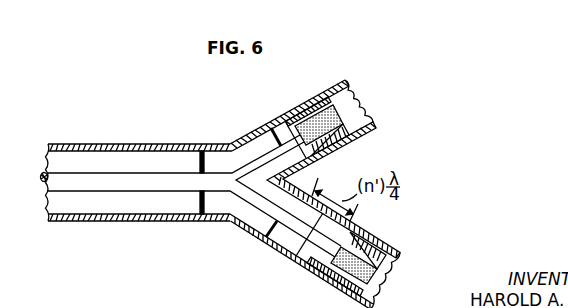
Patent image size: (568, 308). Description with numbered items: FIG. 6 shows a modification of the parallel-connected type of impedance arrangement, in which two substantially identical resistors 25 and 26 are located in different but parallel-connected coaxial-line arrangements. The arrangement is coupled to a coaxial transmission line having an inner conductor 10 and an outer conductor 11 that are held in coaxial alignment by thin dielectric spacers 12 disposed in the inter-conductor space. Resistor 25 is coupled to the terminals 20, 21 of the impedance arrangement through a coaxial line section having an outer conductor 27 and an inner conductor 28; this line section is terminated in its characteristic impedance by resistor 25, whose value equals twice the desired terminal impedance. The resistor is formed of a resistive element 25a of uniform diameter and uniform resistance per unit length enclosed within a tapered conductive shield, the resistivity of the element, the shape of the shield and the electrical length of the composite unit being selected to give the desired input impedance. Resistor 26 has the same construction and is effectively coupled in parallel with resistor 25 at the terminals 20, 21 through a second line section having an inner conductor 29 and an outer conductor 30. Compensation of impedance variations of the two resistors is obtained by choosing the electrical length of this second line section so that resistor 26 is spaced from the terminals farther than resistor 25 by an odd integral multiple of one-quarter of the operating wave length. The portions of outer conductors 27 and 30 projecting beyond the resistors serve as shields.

The inner conductor 10 is at (128, 192).
The outer conductor 11 is at (140, 144).
The dielectric spacers 12 is at (200, 163).
The terminal 20 is at (239, 180).
The terminal 21 is at (229, 144).
The resistor 25 is at (321, 98).
The resistive element 25a is at (327, 156).
The resistor 26 is at (362, 244).
The outer conductor 27 is at (280, 116).
The inner conductor 28 is at (270, 121).
The inner conductor 29 is at (268, 237).
The outer conductor 30 is at (293, 260).